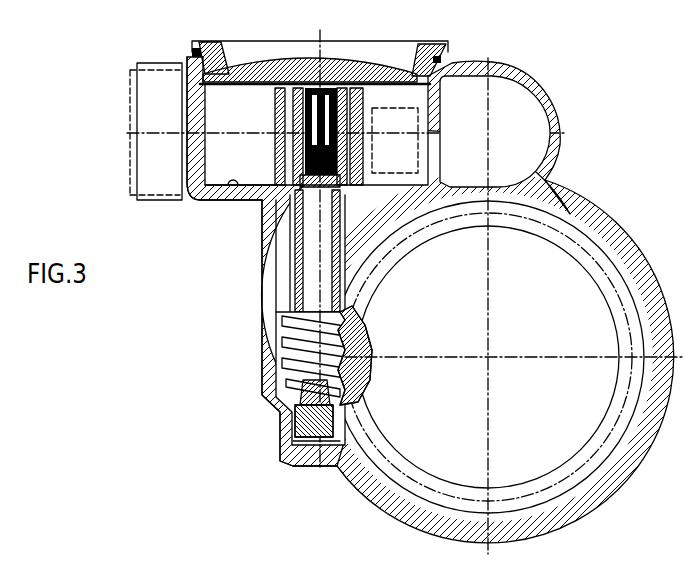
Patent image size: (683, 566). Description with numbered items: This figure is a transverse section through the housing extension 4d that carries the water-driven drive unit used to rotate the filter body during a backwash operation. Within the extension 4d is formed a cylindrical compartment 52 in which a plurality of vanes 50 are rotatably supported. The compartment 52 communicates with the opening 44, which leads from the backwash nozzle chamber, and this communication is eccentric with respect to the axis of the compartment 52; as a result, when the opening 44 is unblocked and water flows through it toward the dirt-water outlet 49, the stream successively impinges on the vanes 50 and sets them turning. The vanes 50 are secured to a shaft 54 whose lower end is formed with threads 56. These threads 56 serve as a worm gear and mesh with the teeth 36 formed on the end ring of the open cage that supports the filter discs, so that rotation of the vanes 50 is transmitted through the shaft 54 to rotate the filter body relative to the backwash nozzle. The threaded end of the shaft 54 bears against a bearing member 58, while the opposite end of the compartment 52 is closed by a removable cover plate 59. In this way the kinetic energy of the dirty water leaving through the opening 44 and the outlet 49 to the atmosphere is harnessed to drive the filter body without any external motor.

The housing section extension 4d is at (196, 58).
The outlet opening 44 is at (388, 108).
The dirt-water outlet 49 is at (542, 88).
The vanes 50 is at (225, 117).
The cylindrical compartment 52 is at (235, 178).
The shaft 54 is at (308, 234).
The threads 56 is at (272, 338).
The bearing member 58 is at (295, 424).
The removable cover plate 59 is at (288, 62).
The teeth 36 is at (362, 368).